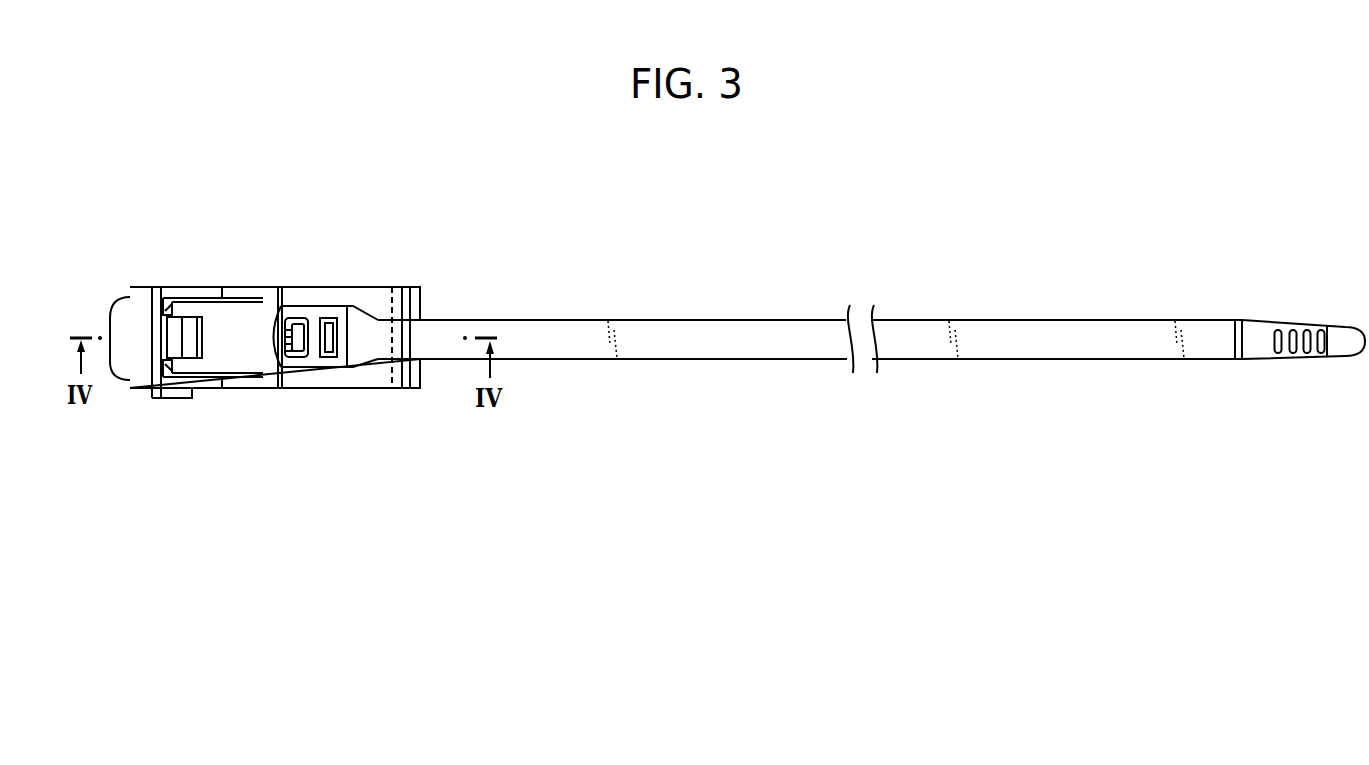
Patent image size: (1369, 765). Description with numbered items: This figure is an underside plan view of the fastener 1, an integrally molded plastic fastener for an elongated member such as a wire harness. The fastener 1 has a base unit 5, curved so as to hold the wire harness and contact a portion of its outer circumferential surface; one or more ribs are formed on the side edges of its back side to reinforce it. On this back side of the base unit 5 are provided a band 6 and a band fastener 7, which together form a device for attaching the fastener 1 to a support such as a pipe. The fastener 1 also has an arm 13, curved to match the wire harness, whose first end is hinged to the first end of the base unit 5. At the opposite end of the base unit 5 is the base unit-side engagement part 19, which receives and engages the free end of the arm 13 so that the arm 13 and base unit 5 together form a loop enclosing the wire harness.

The fastener 1 is at (278, 222).
The base unit 5 is at (252, 362).
The band 6 is at (673, 351).
The band fastener 7 is at (312, 368).
The arm 13 is at (392, 372).
The base unit-side engagement part 19 is at (177, 355).